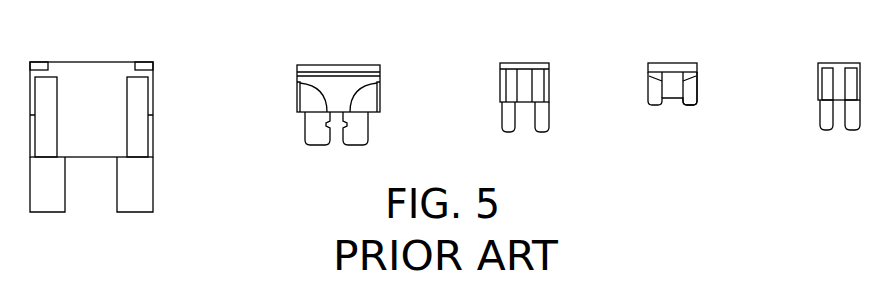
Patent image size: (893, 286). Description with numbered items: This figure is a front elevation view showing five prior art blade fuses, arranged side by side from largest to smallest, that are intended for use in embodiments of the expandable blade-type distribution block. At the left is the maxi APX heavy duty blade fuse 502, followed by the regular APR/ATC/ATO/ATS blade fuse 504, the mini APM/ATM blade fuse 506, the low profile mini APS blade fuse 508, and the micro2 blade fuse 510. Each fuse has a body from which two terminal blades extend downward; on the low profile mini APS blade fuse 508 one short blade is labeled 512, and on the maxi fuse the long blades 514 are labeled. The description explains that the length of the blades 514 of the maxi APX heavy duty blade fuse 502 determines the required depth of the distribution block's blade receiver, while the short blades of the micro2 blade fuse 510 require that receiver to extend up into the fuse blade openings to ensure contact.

The maxi APX heavy duty blade fuse 502 is at (124, 116).
The regular APR/ATC/ATO/ATS blade fuse 504 is at (342, 72).
The mini APM/ATM blade fuse 506 is at (527, 73).
The low profile mini APS blade fuse 508 is at (677, 80).
The micro2 blade fuse 510 is at (832, 65).
The fuse terminal blade 512 is at (687, 98).
The blades 514 is at (140, 178).